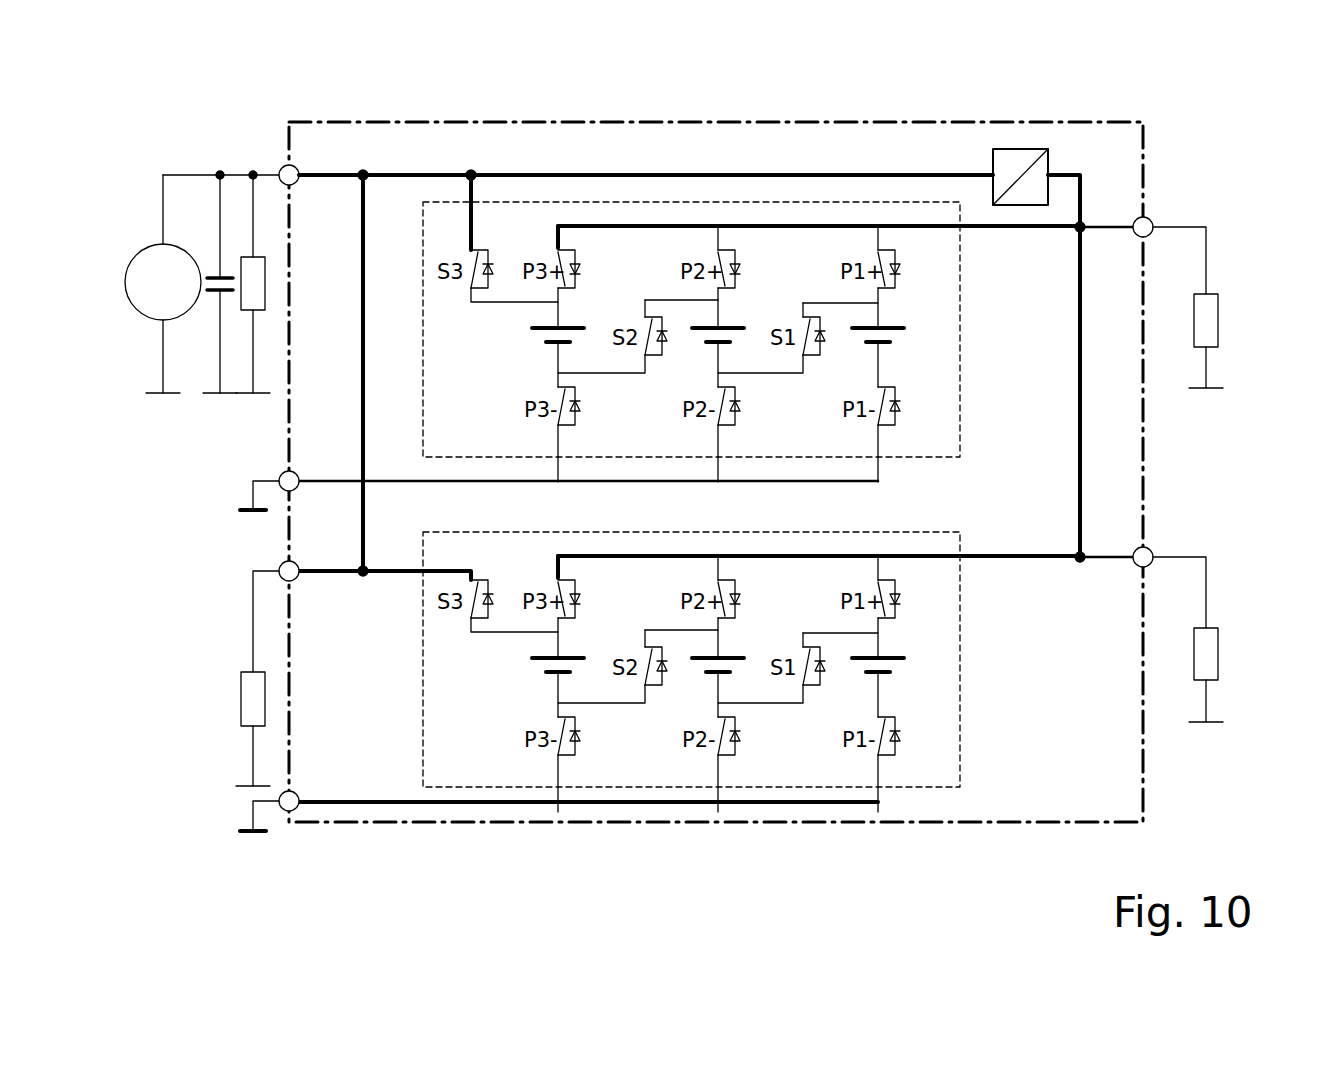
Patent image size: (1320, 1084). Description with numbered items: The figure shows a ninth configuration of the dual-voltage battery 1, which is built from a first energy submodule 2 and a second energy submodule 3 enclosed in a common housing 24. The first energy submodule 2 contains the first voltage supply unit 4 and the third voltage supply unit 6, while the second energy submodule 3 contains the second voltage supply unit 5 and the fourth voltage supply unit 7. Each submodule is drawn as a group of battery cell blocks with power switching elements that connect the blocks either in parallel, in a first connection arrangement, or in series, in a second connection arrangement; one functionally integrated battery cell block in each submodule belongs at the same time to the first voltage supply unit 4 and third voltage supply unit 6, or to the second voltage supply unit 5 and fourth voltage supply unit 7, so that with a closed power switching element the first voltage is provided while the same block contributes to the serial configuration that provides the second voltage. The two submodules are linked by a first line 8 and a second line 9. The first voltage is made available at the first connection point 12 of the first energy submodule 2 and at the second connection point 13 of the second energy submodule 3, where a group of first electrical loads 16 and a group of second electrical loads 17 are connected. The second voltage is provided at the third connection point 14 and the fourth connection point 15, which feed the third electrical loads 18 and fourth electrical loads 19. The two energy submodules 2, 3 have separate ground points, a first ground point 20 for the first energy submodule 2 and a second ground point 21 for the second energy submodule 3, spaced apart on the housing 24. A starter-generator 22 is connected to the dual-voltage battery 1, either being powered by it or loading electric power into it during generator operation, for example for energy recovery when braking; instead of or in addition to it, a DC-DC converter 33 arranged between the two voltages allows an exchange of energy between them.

The dual-voltage battery 1 is at (122, 774).
The first energy submodule 2 is at (912, 150).
The second energy submodule 3 is at (1073, 768).
The first voltage supply unit 4 is at (922, 312).
The second voltage supply unit 5 is at (912, 637).
The third voltage supply unit 6 is at (625, 197).
The fourth voltage supply unit 7 is at (407, 752).
The first line 8 is at (1078, 435).
The second line 9 is at (362, 312).
The first connection point 12 is at (1150, 220).
The second connection point 13 is at (1152, 550).
The third connection point 14 is at (283, 165).
The fourth connection point 15 is at (297, 575).
The first electrical loads 16 is at (1212, 316).
The second electrical loads 17 is at (1212, 652).
The third electrical loads 18 is at (252, 284).
The fourth electrical loads 19 is at (246, 701).
The first ground point 20 is at (294, 488).
The second ground point 21 is at (297, 797).
The starter-generator 22 is at (179, 298).
The housing 24 is at (484, 110).
The DC/DC converter 33 is at (1057, 155).